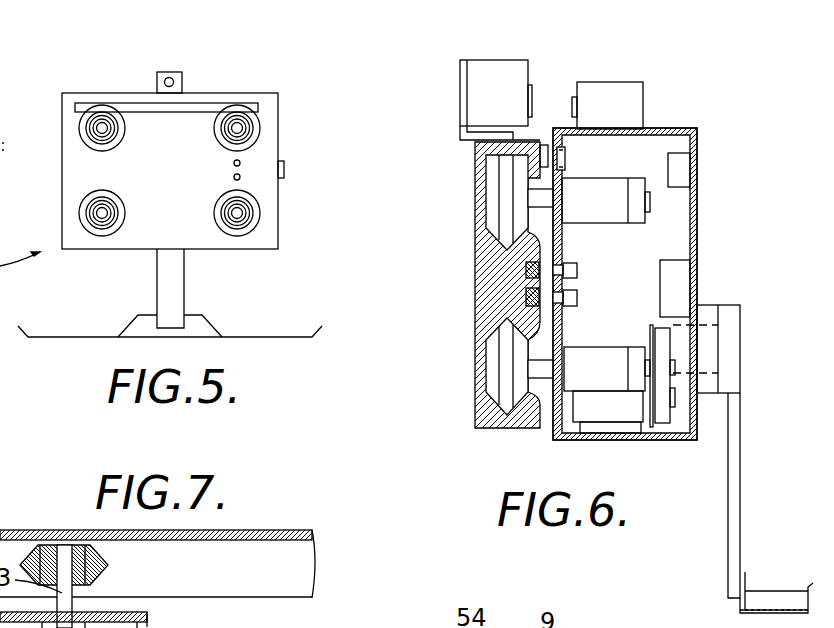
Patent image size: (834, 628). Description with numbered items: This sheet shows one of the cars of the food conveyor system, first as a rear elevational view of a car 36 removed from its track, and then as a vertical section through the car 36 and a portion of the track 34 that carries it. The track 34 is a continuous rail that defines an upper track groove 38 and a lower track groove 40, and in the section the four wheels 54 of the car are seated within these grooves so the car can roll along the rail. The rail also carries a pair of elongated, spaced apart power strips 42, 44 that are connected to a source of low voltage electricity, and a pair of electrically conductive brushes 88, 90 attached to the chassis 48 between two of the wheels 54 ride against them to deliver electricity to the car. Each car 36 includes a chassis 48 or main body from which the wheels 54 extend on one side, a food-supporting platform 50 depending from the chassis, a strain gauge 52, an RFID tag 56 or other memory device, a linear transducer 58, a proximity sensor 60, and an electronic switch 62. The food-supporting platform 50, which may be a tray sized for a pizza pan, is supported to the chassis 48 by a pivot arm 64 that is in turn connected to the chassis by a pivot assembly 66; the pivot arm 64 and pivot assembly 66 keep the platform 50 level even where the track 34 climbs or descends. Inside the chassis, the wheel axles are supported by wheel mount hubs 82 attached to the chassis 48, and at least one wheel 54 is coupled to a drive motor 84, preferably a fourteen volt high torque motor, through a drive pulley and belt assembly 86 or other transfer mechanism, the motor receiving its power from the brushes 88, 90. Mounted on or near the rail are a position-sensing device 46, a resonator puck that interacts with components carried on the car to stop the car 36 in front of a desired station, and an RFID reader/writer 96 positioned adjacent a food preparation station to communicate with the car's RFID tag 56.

In FIG. 6, the track 34 is at (467, 205).
In FIG. 6, the car 36 is at (717, 117).
In FIG. 6, the upper track groove 38 is at (485, 242).
In FIG. 6, the lower track groove 40 is at (483, 383).
In FIG. 6, the power strip 42 is at (527, 272).
In FIG. 6, the power strip 44 is at (523, 297).
In FIG. 6, the position-sensing device 46 is at (544, 143).
In FIG. 5, the chassis 48 is at (266, 96).
In FIG. 6, the chassis 48 is at (695, 203).
In FIG. 5, the food-supporting platform 50 is at (97, 337).
In FIG. 6, the food-supporting platform 50 is at (773, 610).
In FIG. 6, the strain gauge 52 is at (685, 278).
In FIG. 5, the wheel 54 is at (82, 129).
In FIG. 6, the wheel 54 is at (497, 173).
In FIG. 7, the wheel 54 is at (100, 570).
In FIG. 5, the RFID tag 56 is at (171, 76).
In FIG. 6, the RFID tag 56 is at (633, 92).
In FIG. 5, the linear transducer 58 is at (138, 106).
In FIG. 6, the linear transducer 58 is at (567, 153).
In FIG. 5, the proximity sensor 60 is at (288, 169).
In FIG. 6, the electronic switch 62 is at (683, 168).
In FIG. 5, the pivot arm 64 is at (177, 290).
In FIG. 6, the pivot arm 64 is at (732, 522).
In FIG. 6, the pivot assembly 66 is at (718, 363).
In FIG. 6, the wheel mount hub 82 is at (582, 353).
In FIG. 6, the drive motor 84 is at (592, 412).
In FIG. 6, the drive pulley and belt assembly 86 is at (660, 412).
In FIG. 5, the electrically conductive brush 88 is at (233, 162).
In FIG. 6, the electrically conductive brush 88 is at (540, 266).
In FIG. 5, the electrically conductive brush 90 is at (233, 178).
In FIG. 6, the electrically conductive brush 90 is at (542, 295).
In FIG. 6, the RFID reader/writer 96 is at (478, 85).